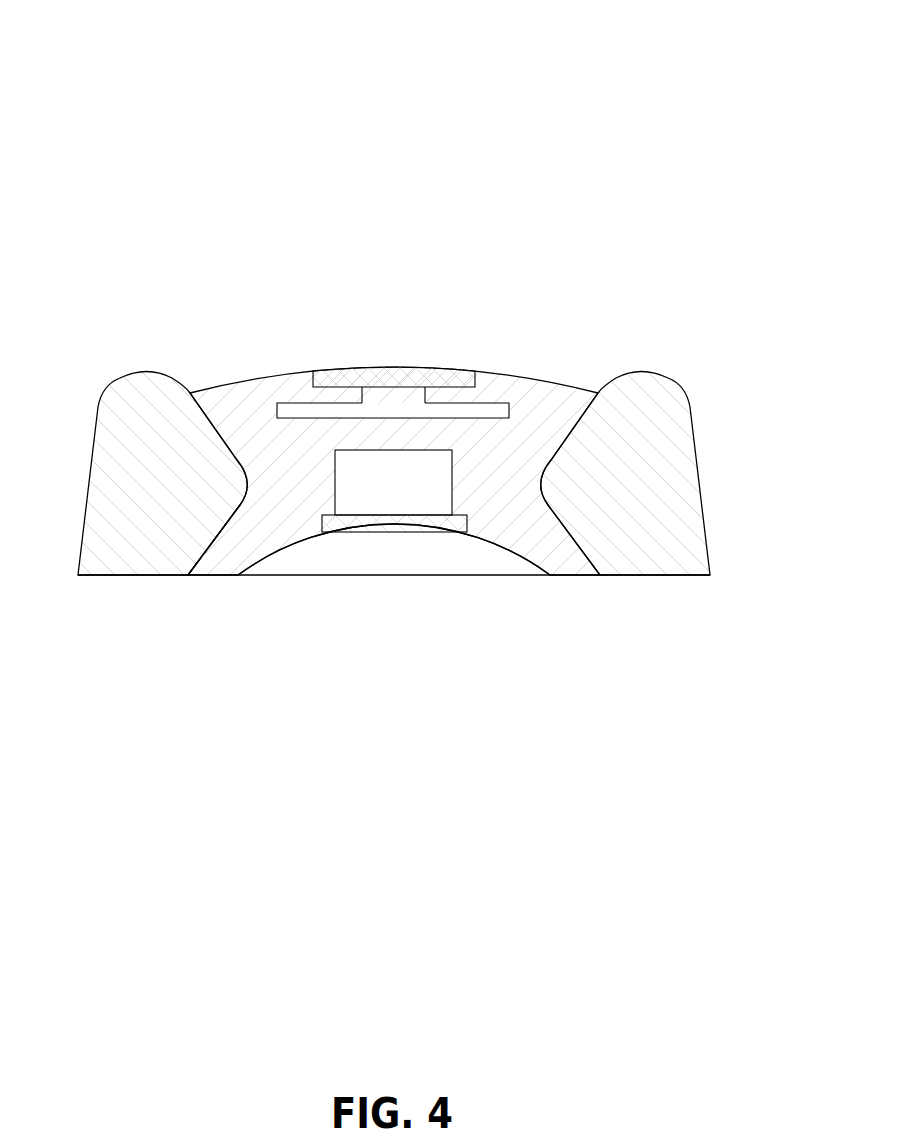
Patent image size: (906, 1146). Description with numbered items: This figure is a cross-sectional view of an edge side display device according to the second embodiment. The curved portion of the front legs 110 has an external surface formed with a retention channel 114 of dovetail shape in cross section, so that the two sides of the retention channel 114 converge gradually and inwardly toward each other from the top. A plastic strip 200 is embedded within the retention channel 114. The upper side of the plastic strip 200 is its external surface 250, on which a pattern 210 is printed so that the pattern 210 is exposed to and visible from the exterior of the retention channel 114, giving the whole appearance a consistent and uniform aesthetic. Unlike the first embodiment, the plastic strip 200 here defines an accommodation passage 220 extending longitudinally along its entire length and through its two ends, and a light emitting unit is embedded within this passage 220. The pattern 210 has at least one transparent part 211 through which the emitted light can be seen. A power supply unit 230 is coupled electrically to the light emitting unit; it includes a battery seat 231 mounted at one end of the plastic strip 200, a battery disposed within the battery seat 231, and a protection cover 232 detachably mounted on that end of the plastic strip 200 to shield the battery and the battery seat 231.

The plastic strip 200 is at (489, 108).
The front legs 110 is at (692, 366).
The retention channel 114 is at (217, 542).
The pattern 210 is at (402, 312).
The transparent part 211 is at (379, 372).
The accommodation passage 220 is at (298, 412).
The power supply unit 230 is at (394, 609).
The battery seat 231 is at (388, 472).
The protection cover 232 is at (453, 528).
The external surface 250 is at (239, 383).